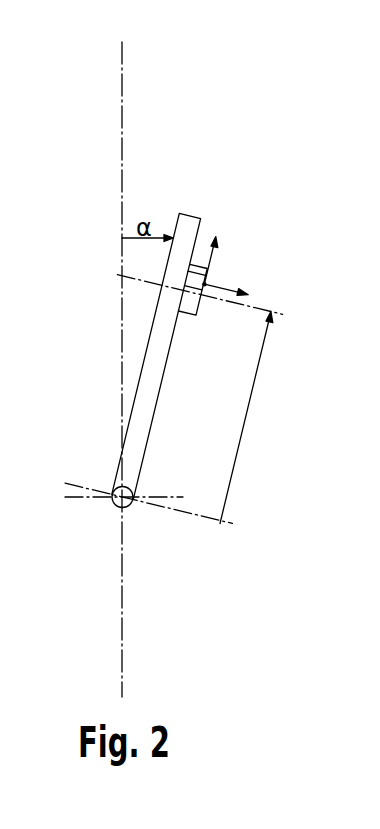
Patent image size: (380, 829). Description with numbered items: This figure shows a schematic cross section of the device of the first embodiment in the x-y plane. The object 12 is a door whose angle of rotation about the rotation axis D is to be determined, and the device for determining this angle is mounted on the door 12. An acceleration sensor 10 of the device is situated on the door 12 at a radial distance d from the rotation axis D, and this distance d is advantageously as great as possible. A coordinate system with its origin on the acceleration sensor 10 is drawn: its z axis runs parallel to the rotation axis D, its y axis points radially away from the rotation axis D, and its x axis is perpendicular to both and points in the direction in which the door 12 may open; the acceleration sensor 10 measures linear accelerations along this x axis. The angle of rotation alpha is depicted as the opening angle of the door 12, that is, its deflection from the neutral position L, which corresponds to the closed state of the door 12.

The acceleration sensor 10 is at (192, 292).
The object 12 is at (192, 214).
The neutral position L is at (122, 83).
The rotation axis D is at (128, 510).
The radial distance d is at (248, 417).